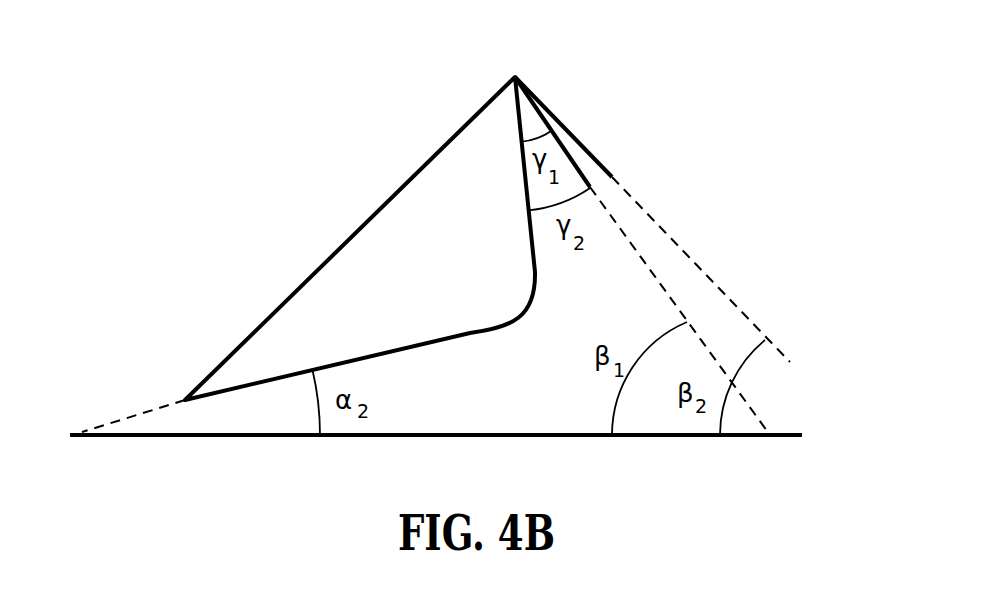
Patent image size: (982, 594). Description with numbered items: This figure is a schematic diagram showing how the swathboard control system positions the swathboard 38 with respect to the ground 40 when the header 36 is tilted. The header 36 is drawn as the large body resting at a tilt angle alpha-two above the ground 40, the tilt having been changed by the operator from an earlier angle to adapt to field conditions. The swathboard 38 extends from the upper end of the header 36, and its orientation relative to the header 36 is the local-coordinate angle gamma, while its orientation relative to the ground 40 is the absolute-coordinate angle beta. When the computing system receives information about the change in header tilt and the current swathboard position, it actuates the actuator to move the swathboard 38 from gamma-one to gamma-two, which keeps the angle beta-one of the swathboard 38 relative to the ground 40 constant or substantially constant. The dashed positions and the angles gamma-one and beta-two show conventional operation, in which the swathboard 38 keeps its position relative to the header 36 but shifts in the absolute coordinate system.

The header 36 is at (464, 256).
The swathboard 38 is at (535, 102).
The ground 40 is at (680, 437).